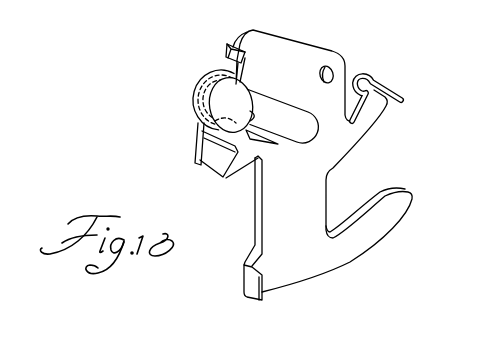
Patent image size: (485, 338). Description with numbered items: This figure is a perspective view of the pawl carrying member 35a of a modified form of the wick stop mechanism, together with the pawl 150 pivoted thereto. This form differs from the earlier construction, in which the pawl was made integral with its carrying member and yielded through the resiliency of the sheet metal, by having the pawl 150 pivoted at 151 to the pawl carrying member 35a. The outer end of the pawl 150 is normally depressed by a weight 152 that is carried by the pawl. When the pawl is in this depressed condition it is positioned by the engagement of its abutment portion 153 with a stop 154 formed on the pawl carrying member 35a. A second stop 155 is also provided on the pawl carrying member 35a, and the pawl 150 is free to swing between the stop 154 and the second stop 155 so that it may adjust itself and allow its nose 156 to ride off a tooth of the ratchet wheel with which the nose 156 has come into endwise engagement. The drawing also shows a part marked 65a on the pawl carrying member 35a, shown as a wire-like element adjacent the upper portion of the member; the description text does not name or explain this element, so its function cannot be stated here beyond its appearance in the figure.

The pawl carrying member 35a is at (319, 165).
The pawl 150 is at (276, 99).
The pivot 151 is at (258, 117).
The weight 152 is at (225, 103).
The abutment portion 153 is at (205, 142).
The stop 154 is at (216, 167).
The second stop 155 is at (227, 50).
The nose 156 is at (270, 145).
The spring wire 65a is at (392, 84).